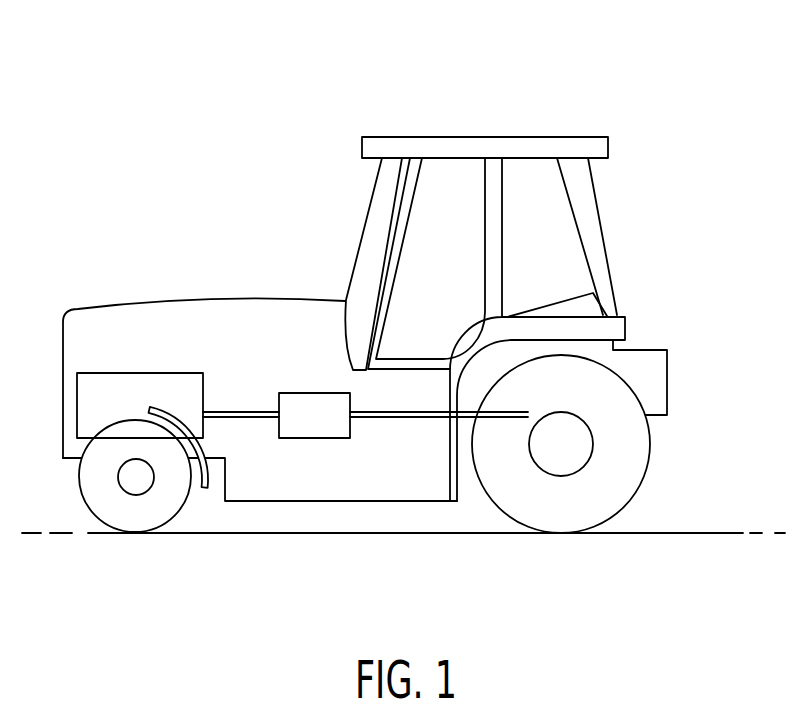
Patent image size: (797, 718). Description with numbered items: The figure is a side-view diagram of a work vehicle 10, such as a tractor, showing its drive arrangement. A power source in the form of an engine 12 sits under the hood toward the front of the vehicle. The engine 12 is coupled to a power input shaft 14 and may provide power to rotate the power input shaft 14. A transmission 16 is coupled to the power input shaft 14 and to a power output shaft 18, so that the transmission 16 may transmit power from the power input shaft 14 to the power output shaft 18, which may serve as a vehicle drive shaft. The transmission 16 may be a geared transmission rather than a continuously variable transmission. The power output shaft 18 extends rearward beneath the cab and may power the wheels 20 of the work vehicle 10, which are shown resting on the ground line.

The work vehicle 10 is at (660, 59).
The engine 12 is at (177, 373).
The power input shaft 14 is at (238, 412).
The transmission 16 is at (316, 438).
The power output shaft 18 is at (440, 417).
The wheels 20 is at (618, 452).